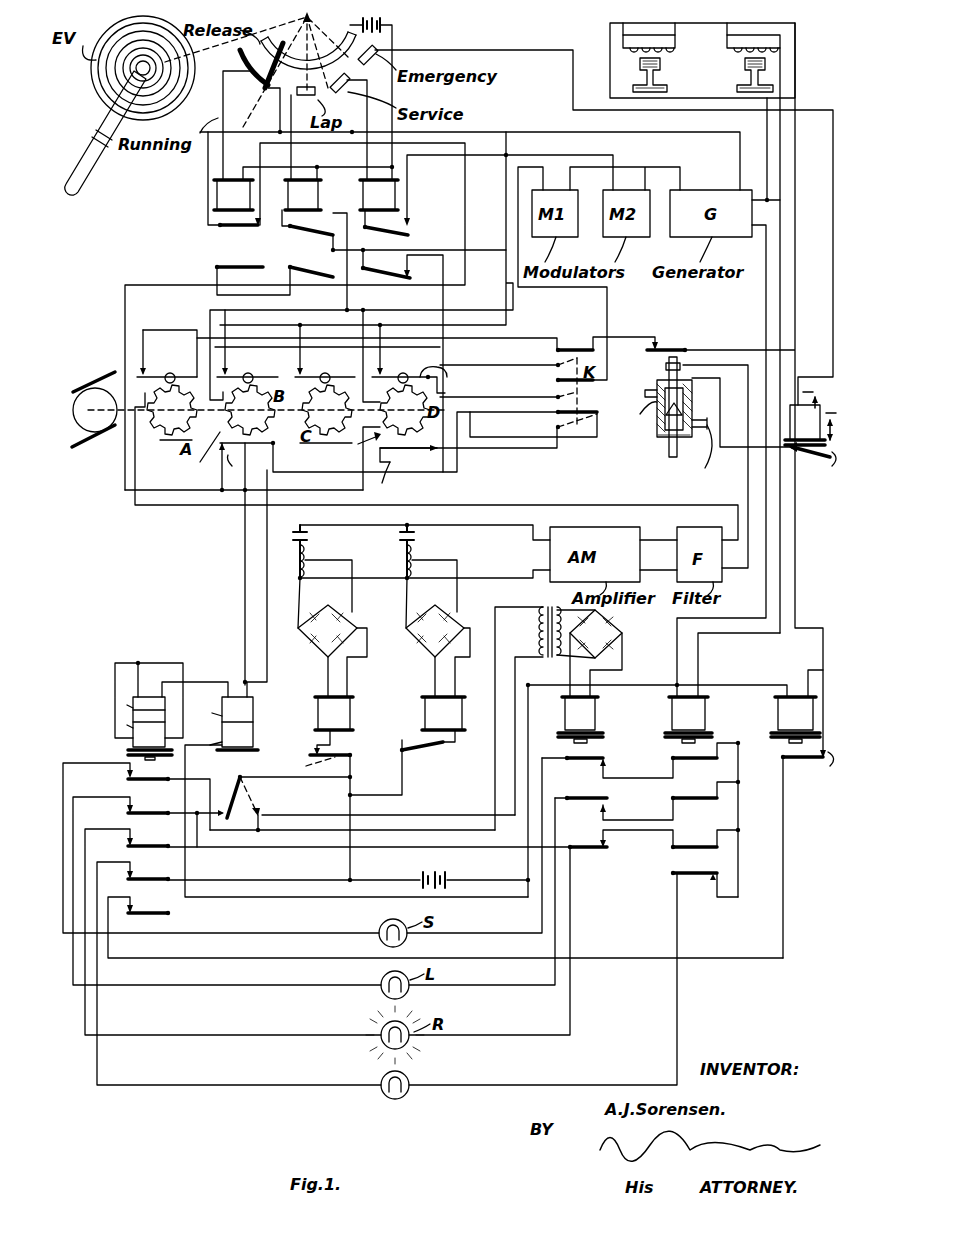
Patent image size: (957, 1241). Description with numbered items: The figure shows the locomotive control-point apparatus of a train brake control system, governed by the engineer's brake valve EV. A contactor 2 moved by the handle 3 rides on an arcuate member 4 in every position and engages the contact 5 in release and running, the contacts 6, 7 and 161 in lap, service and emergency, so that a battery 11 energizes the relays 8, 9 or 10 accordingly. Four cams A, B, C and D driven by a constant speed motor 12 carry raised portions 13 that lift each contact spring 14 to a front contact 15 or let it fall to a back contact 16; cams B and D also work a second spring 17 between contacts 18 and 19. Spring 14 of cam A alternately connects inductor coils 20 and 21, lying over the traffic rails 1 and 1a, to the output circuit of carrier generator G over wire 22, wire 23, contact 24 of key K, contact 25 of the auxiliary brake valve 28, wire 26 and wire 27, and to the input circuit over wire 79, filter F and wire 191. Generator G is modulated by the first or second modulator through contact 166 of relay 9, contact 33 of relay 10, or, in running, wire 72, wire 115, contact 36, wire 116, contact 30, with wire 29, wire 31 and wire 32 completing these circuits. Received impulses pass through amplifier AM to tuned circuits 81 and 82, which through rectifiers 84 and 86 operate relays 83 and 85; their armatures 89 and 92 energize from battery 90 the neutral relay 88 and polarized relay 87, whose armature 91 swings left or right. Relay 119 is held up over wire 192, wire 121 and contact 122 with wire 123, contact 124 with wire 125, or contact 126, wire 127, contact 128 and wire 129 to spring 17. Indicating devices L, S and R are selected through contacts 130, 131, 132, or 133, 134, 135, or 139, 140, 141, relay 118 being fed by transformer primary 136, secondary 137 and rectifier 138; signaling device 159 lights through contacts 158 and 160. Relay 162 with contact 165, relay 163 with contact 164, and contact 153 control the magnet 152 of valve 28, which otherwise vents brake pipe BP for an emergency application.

The traffic rail 1 is at (656, 82).
The traffic rail 1a is at (740, 82).
The contactor 2 is at (262, 82).
The handle 3 is at (86, 162).
The arcuate member 4 is at (350, 37).
The contact 5 is at (245, 115).
The contact 6 is at (332, 92).
The contact 7 is at (348, 121).
The relay 8 is at (232, 178).
The relay 9 is at (304, 178).
The relay 10 is at (396, 198).
The battery 11 is at (392, 25).
The constant speed motor 12 is at (90, 432).
The raised portions 13 is at (291, 445).
The contact spring 14 is at (302, 377).
The front contact 15 is at (261, 400).
The back contact 16 is at (146, 392).
The second spring 17 is at (388, 458).
The contact 18 is at (281, 456).
The contact 19 is at (315, 478).
The inductor coil 20 is at (649, 33).
The inductor coil 21 is at (753, 324).
The wire 22 is at (628, 320).
The wire 23 is at (196, 343).
The contact of key K 24 is at (574, 340).
The contact 25 is at (655, 345).
The wire 26 is at (716, 350).
The wire 27 is at (610, 84).
The auxiliary brake valve 28 is at (665, 436).
The wire 29 is at (518, 170).
The contact of relay 8 30 is at (266, 222).
The wire 31 is at (205, 186).
The wire 32 is at (680, 167).
The contact of relay 10 33 is at (410, 234).
The contact of key K 36 is at (580, 388).
The wire 72 is at (225, 318).
The wire 79 is at (797, 537).
The tuned circuit 81 is at (322, 568).
The tuned circuit 82 is at (428, 568).
The relay 83 is at (351, 722).
The full-wave rectifier 84 is at (305, 647).
The relay 85 is at (460, 716).
The rectifier 86 is at (413, 647).
The polarized relay 87 is at (253, 720).
The neutral relay 88 is at (168, 710).
The armature 89 is at (316, 750).
The battery 90 is at (430, 875).
The polarized armature 91 is at (236, 782).
The armature 92 is at (422, 750).
The wire 115 is at (550, 380).
The wire 116 is at (466, 236).
The slow-releasing relay 118 is at (568, 714).
The slow-releasing relay 119 is at (676, 714).
The wire 121 is at (700, 645).
The front contact of relay 9 122 is at (335, 272).
The wire 123 is at (158, 497).
The front contact of relay 10 124 is at (402, 363).
The wire 125 is at (256, 520).
The front contact of relay 8 126 is at (257, 266).
The wire 127 is at (572, 440).
The contact of key K 128 is at (552, 416).
The wire 129 is at (457, 476).
The front contact of relay 119 130 is at (713, 796).
The back contact of relay 118 131 is at (596, 806).
The front contact of relay 88 132 is at (227, 888).
The front contact of relay 119 133 is at (712, 752).
The back contact of relay 118 134 is at (600, 768).
The front contact of relay 88 135 is at (128, 776).
The primary winding 136 is at (538, 618).
The secondary 137 is at (556, 660).
The rectifier 138 is at (616, 630).
The front contact of relay 119 139 is at (712, 840).
The front contact of relay 118 140 is at (607, 847).
The front contact of relay 88 141 is at (327, 930).
The magnet 152 is at (668, 372).
The front contact of relay 88 153 is at (445, 925).
The back contact of relay 119 158 is at (713, 882).
The signaling device 159 is at (410, 1082).
The front contact of relay 88 160 is at (258, 971).
The contact 161 is at (395, 50).
The relay 162 is at (781, 714).
The slow-releasing relay 163 is at (800, 390).
The front contact of relay 163 164 is at (813, 464).
The front contact of relay 162 165 is at (807, 854).
The contact of relay 9 166 is at (332, 220).
The wire 191 is at (640, 488).
The wire 192 is at (527, 862).